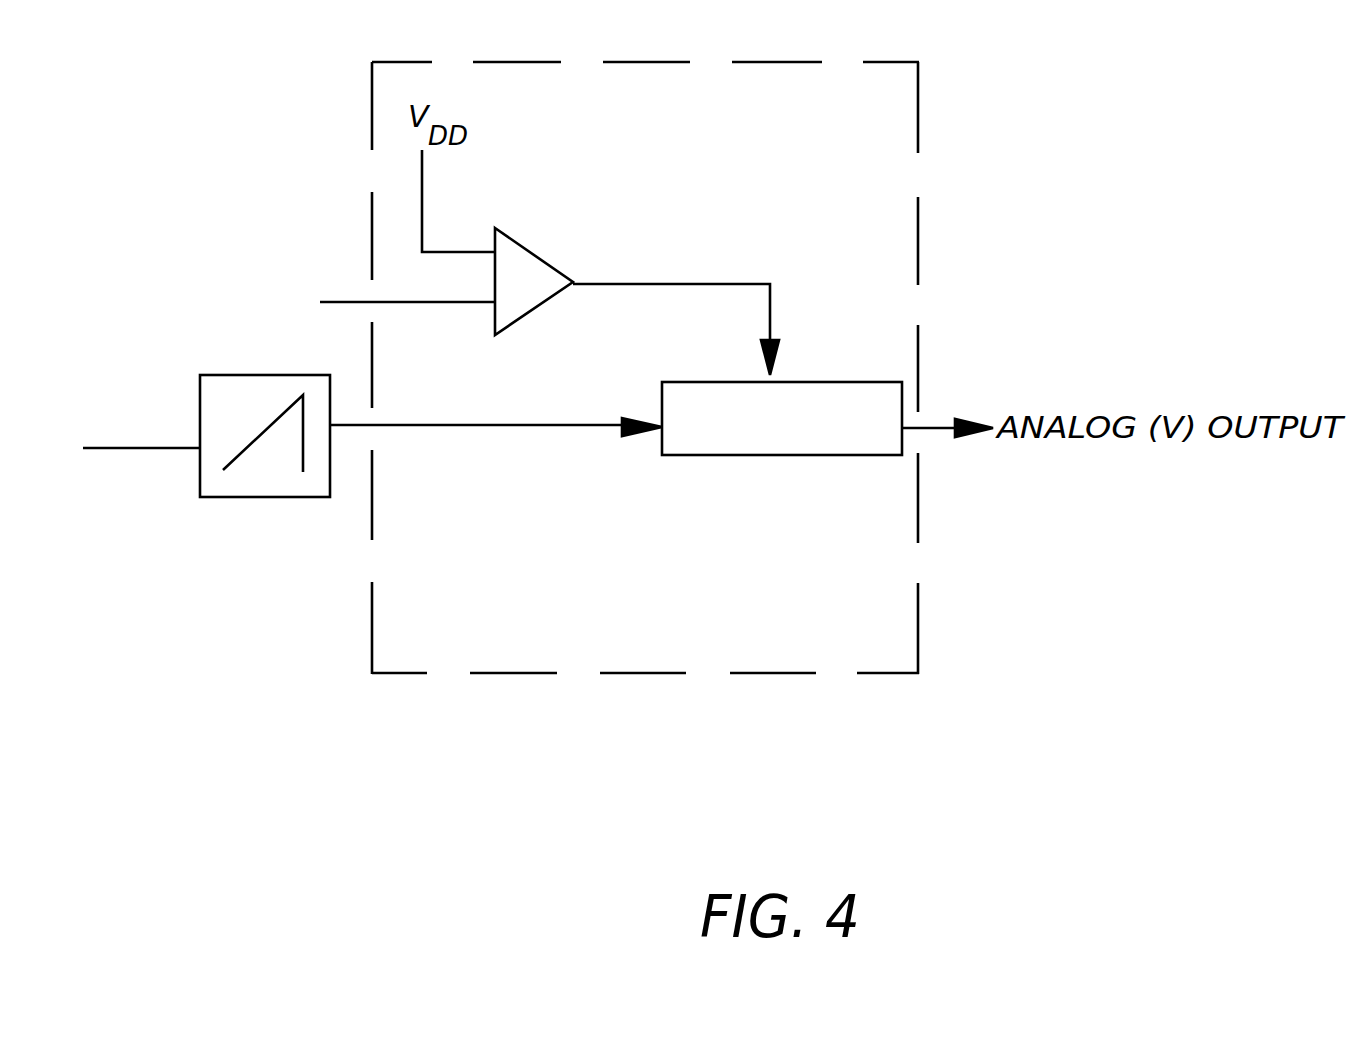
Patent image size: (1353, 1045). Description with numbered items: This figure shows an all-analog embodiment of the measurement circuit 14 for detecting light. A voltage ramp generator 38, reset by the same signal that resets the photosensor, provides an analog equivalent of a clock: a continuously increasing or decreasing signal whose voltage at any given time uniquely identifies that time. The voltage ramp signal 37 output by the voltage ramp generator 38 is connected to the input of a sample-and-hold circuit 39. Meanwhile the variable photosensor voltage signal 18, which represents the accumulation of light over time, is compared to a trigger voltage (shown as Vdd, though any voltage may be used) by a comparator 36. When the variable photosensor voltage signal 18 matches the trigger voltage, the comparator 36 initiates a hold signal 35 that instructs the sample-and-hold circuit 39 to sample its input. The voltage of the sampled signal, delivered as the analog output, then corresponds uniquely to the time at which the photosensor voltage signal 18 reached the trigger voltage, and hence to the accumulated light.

The measurement circuit 14 is at (768, 674).
The variable voltage signal 18 is at (347, 300).
The hold signal 35 is at (715, 284).
The comparator 36 is at (530, 248).
The voltage ramp signal 37 is at (573, 427).
The voltage ramp generator 38 is at (253, 497).
The sample-and-hold circuit 39 is at (810, 455).